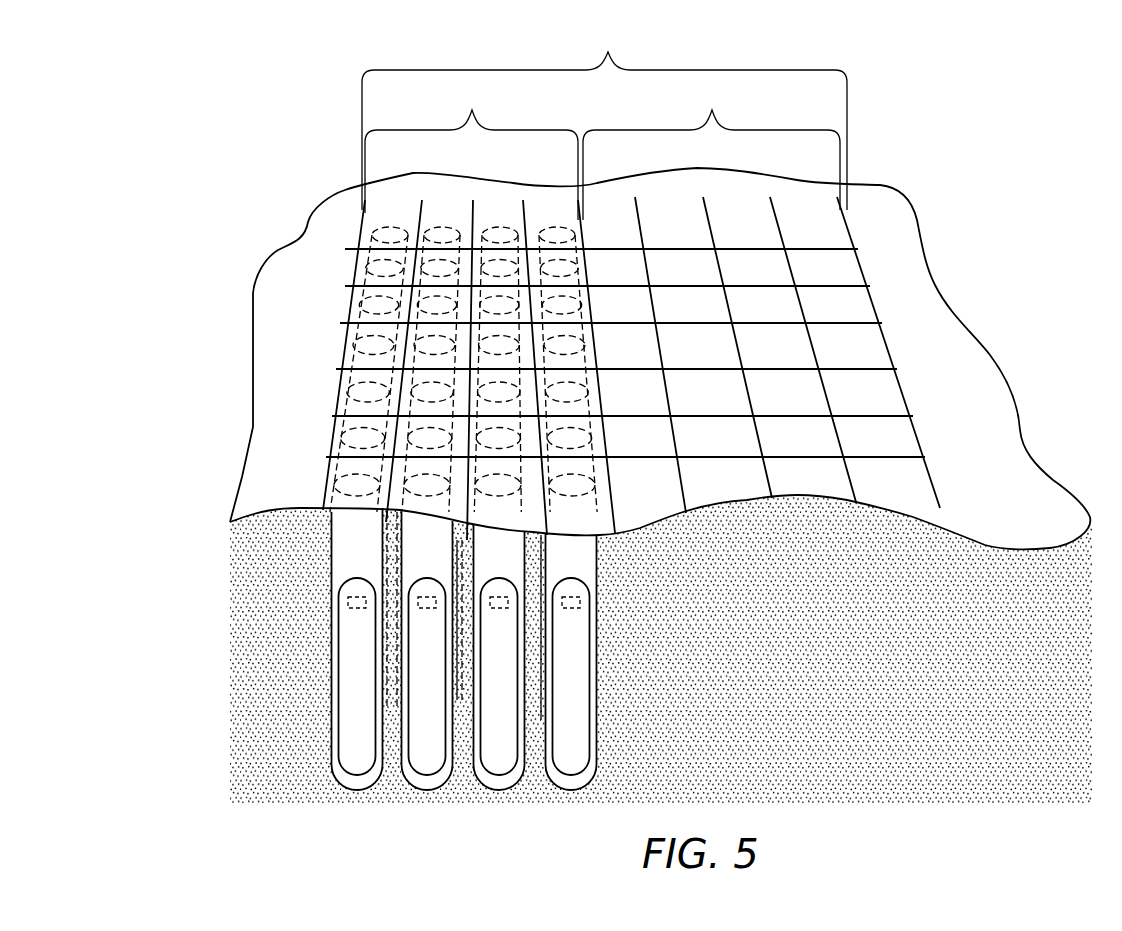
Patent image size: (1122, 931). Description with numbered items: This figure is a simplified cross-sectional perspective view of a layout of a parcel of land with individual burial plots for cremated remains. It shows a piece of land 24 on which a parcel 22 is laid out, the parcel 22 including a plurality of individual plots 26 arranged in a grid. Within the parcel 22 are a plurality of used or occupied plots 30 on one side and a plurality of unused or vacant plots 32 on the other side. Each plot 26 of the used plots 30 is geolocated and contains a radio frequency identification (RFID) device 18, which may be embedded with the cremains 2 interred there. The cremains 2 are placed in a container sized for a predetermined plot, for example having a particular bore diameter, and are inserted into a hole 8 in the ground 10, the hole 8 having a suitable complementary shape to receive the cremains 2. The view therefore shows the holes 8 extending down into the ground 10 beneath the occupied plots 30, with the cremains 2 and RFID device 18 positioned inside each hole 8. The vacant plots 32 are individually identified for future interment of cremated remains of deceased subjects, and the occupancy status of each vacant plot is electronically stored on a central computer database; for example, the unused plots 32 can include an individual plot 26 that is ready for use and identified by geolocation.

The cremains 2 is at (570, 747).
The hole 8 is at (598, 553).
The ground 10 is at (686, 637).
The radio frequency identification (RFID) device 18 is at (567, 611).
The parcel 22 is at (660, 286).
The piece of land 24 is at (1002, 440).
The individual plots 26 is at (348, 387).
The used or occupied plots 30 is at (463, 298).
The unused or vacant plots 32 is at (711, 152).